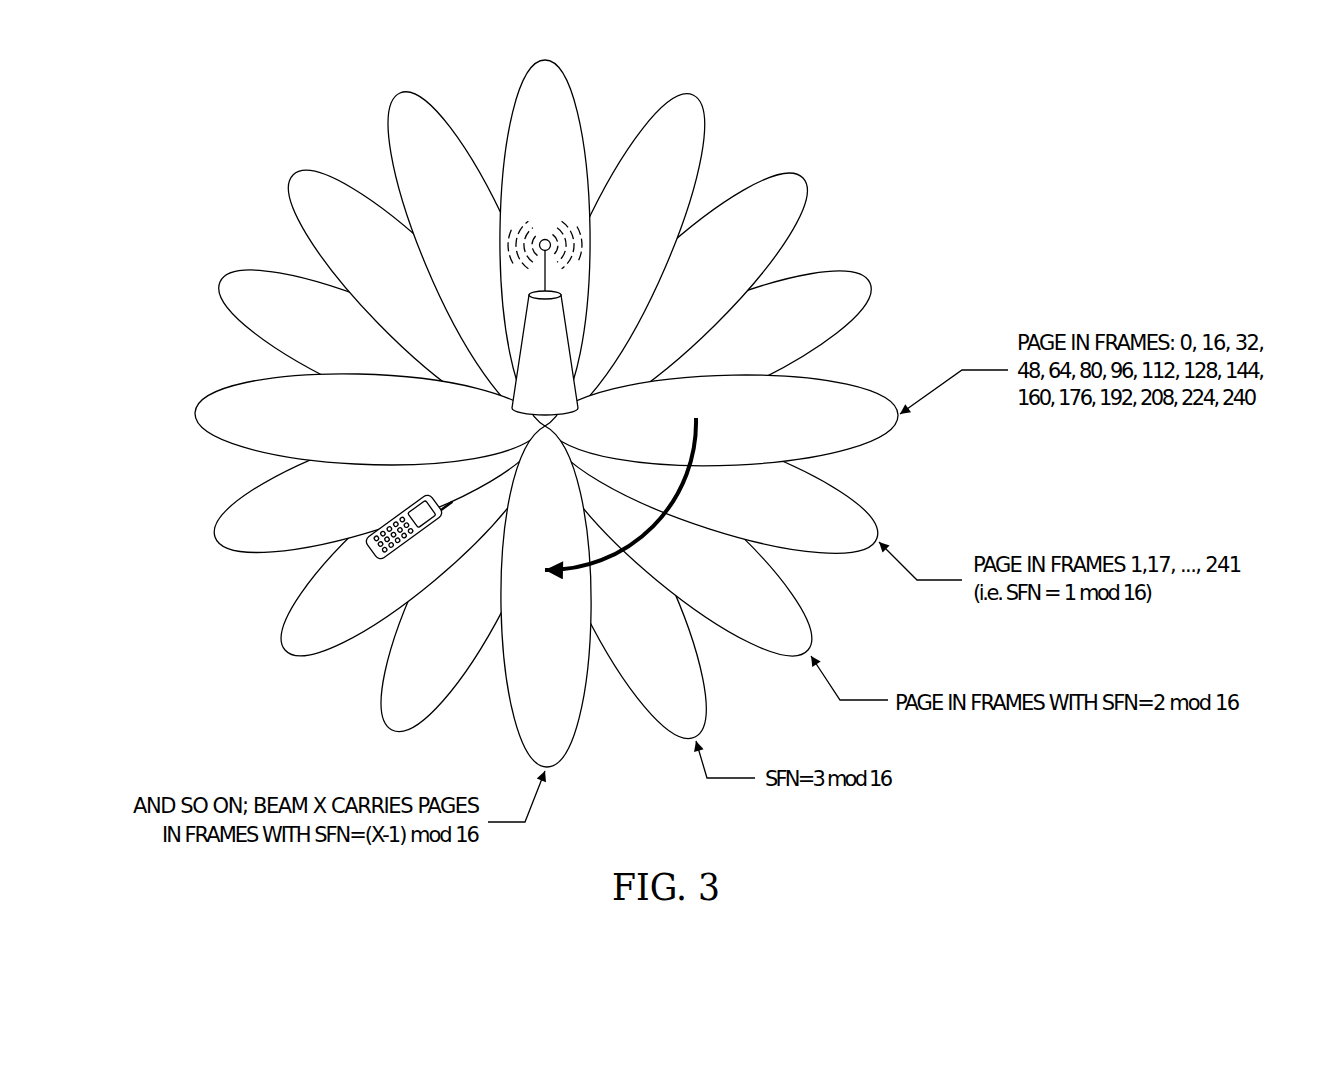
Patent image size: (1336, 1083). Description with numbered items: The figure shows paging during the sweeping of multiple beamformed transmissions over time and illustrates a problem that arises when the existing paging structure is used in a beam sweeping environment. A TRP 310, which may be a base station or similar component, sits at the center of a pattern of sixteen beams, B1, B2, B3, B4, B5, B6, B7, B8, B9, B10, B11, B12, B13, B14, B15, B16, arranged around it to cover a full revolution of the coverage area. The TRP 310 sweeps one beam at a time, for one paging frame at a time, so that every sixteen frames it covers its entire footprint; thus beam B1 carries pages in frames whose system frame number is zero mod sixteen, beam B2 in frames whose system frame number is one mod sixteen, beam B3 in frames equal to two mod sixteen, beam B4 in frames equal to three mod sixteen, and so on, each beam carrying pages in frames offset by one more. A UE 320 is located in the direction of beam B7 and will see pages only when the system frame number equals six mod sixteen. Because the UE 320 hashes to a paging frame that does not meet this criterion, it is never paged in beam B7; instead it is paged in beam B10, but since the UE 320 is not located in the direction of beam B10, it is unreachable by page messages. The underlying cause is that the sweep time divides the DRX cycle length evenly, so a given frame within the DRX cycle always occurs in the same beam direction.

The TRP 310 is at (578, 404).
The UE 320 is at (382, 557).
The first beam B1 is at (721, 420).
The second beam B2 is at (711, 483).
The beam B3 is at (677, 540).
The beam B4 is at (621, 582).
The beam B5 is at (546, 596).
The beam B6 is at (467, 579).
The beam B7 is at (413, 540).
The beam B8 is at (379, 482).
The beam B9 is at (370, 419).
The beam B10 is at (382, 352).
The beam B11 is at (417, 298).
The beam B12 is at (471, 259).
The beam B13 is at (545, 243).
The beam B14 is at (621, 260).
The beam B15 is at (675, 300).
The beam B16 is at (708, 353).